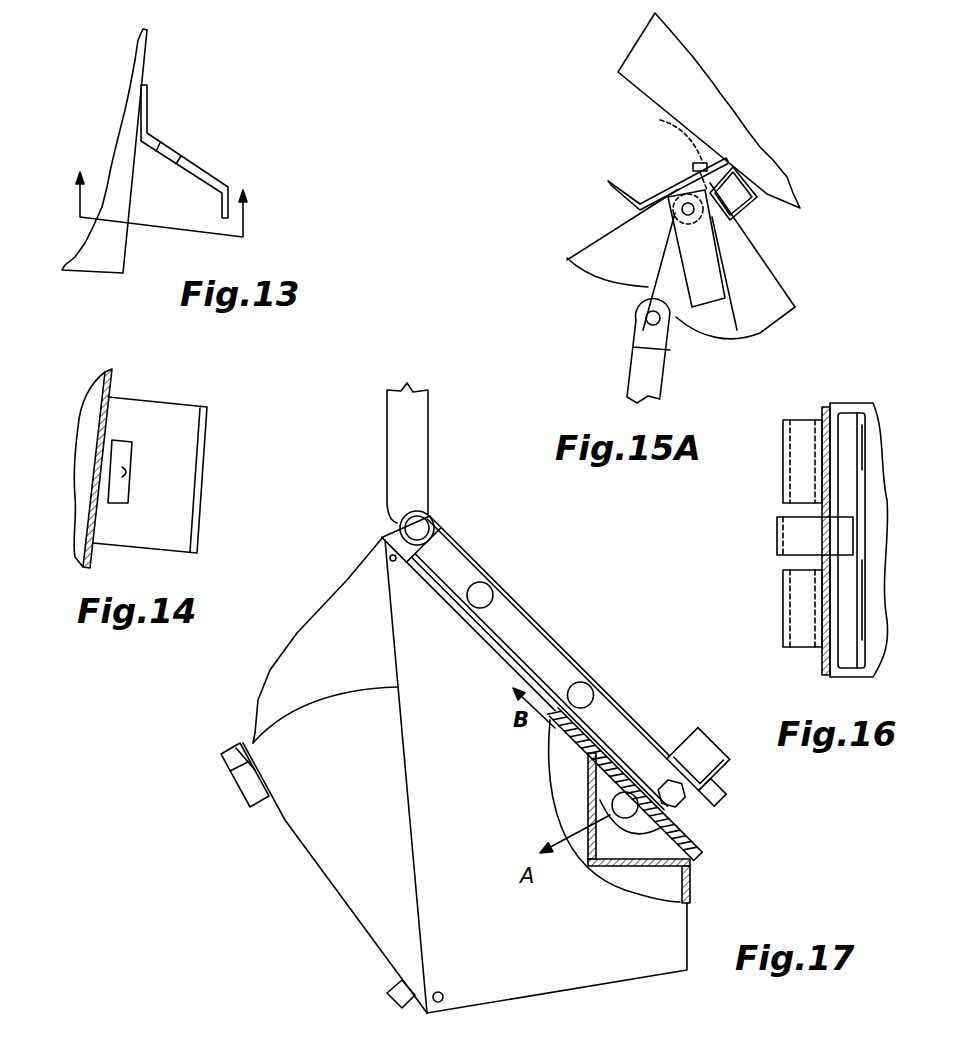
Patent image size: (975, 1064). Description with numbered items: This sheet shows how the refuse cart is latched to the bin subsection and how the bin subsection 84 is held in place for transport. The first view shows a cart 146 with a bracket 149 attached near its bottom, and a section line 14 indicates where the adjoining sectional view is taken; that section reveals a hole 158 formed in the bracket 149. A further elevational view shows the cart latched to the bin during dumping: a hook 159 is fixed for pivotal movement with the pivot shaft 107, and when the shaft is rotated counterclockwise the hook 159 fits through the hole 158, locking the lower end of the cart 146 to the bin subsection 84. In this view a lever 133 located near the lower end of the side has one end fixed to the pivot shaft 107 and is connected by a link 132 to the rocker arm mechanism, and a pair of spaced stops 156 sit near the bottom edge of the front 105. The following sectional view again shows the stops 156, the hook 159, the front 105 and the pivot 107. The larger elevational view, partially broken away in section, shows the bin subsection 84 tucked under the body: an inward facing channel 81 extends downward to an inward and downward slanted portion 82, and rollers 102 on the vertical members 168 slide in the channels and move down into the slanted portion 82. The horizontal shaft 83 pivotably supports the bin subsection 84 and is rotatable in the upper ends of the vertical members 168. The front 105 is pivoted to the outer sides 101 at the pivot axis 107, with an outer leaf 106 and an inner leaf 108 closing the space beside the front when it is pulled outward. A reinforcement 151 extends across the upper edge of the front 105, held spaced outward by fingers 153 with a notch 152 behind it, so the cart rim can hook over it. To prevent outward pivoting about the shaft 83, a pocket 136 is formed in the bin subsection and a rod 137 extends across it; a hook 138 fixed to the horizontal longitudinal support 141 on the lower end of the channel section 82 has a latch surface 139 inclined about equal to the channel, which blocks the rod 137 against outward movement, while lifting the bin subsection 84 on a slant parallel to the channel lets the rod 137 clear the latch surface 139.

In FIG. 13, the section line 14— 14 is at (168, 204).
In FIG. 17, the inward facing channel 81 is at (428, 442).
In FIG. 17, the inward/downward slanted portion 82 is at (567, 652).
In FIG. 17, the horizontal shaft 83 is at (428, 514).
In FIG. 17, the bin subsection 84 is at (569, 965).
In FIG. 17, the outer side 101 is at (476, 817).
In FIG. 17, the roller 102 is at (490, 568).
In FIG. 16, the front 105 is at (822, 413).
In FIG. 17, the front 105 is at (333, 890).
In FIG. 17, the outer leaf 106 is at (366, 807).
In FIG. 15A, the pivot axis 107 is at (680, 210).
In FIG. 16, the pivot axis 107 is at (857, 432).
In FIG. 17, the pivot axis 107 is at (440, 990).
In FIG. 17, the inner leaf 108 is at (354, 652).
In FIG. 15A, the link 132 is at (640, 363).
In FIG. 15A, the lever 133 is at (660, 283).
In FIG. 17, the pocket 136 is at (620, 870).
In FIG. 17, the rod 137 is at (607, 780).
In FIG. 17, the hook 138 is at (693, 880).
In FIG. 17, the latch surface 139 is at (610, 807).
In FIG. 17, the horizontal longitudinal support 141 is at (723, 763).
In FIG. 13, the cart 146 is at (148, 56).
In FIG. 14, the cart 146 is at (112, 381).
In FIG. 15A, the cart 146 is at (703, 98).
In FIG. 13, the bracket 149 is at (203, 167).
In FIG. 14, the bracket 149 is at (187, 448).
In FIG. 15A, the bracket 149 is at (672, 183).
In FIG. 17, the reinforcement 151 is at (225, 768).
In FIG. 17, the notch 152 is at (243, 748).
In FIG. 17, the finger 153 is at (248, 792).
In FIG. 15A, the stop 156 is at (740, 210).
In FIG. 16, the stop 156 is at (793, 467).
In FIG. 13, the hole 158 is at (172, 148).
In FIG. 14, the hole 158 is at (128, 480).
In FIG. 15A, the hole 158 is at (688, 140).
In FIG. 15A, the hook 159 is at (700, 163).
In FIG. 16, the hook 159 is at (777, 533).
In FIG. 17, the vertical member 168 is at (532, 640).